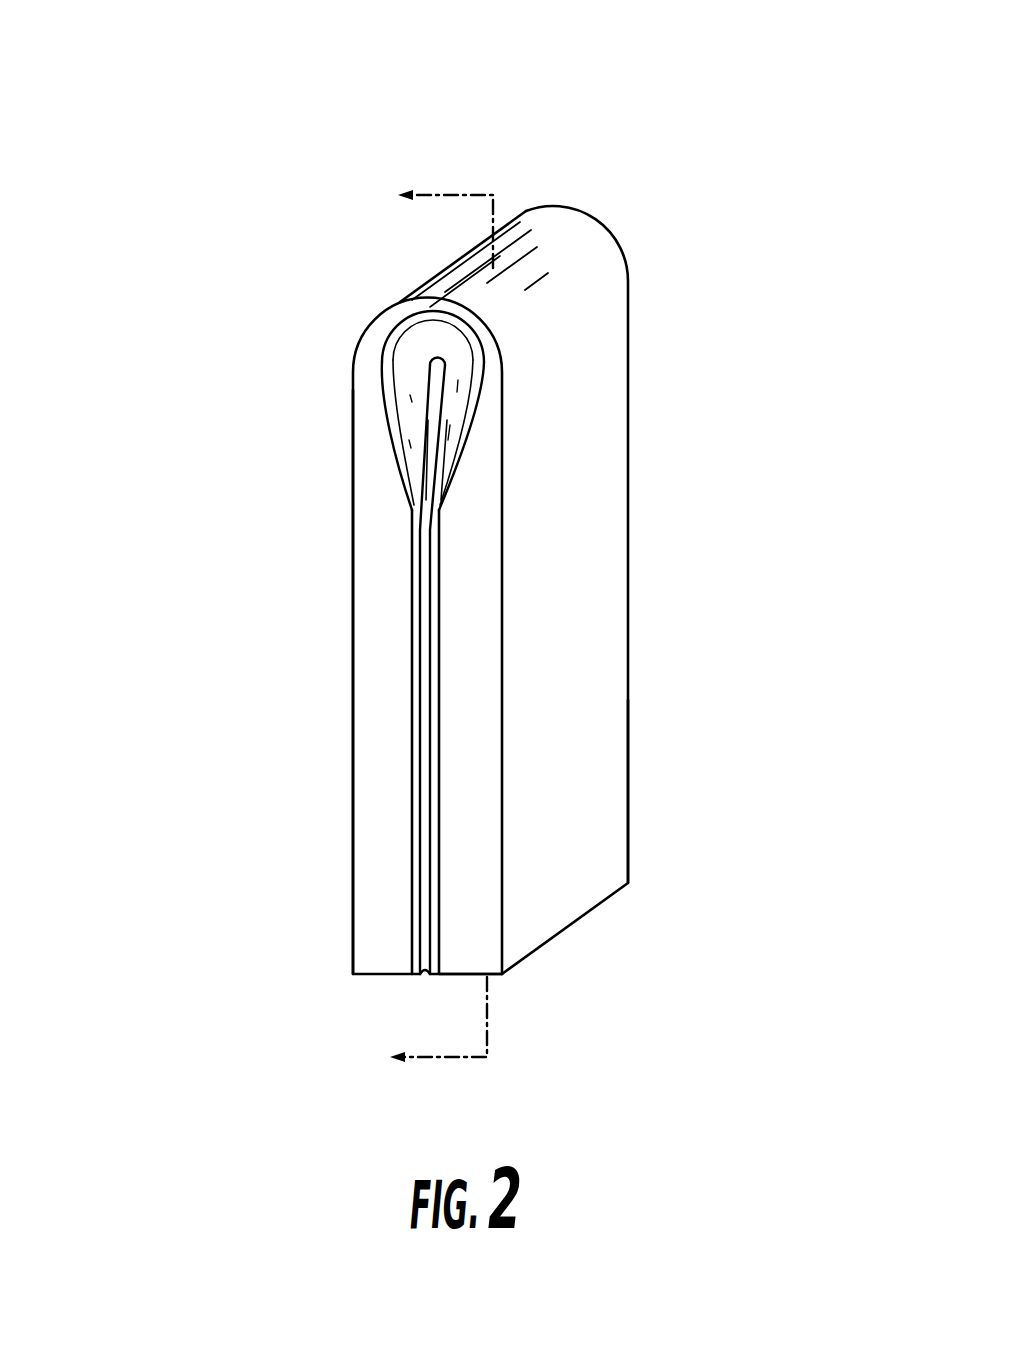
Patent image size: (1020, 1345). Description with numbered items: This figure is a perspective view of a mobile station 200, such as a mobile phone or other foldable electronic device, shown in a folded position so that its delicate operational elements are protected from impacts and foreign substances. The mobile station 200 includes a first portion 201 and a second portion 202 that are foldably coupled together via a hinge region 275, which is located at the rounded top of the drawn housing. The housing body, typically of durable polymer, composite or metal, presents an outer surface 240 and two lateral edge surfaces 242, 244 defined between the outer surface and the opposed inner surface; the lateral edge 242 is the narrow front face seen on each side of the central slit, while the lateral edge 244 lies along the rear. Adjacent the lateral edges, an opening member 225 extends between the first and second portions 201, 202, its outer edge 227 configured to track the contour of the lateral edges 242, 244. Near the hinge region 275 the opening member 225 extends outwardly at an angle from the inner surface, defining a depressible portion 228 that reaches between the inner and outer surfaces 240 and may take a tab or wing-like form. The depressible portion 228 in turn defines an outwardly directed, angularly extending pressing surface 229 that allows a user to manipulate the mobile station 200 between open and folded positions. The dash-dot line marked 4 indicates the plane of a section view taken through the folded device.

The mobile station 200 is at (690, 123).
The hinge region 275 is at (515, 195).
The pressing surface 229 is at (425, 338).
The depressible portion 228 is at (397, 363).
The opening member 225 is at (438, 508).
The outer surface 240 is at (588, 585).
The lateral edge surface 244 is at (628, 757).
The outer edge 227 is at (407, 637).
The lateral edge surface 242 is at (408, 823).
The second portion 202 is at (380, 940).
The first portion 201 is at (478, 947).
The section line 4- 4 is at (430, 622).